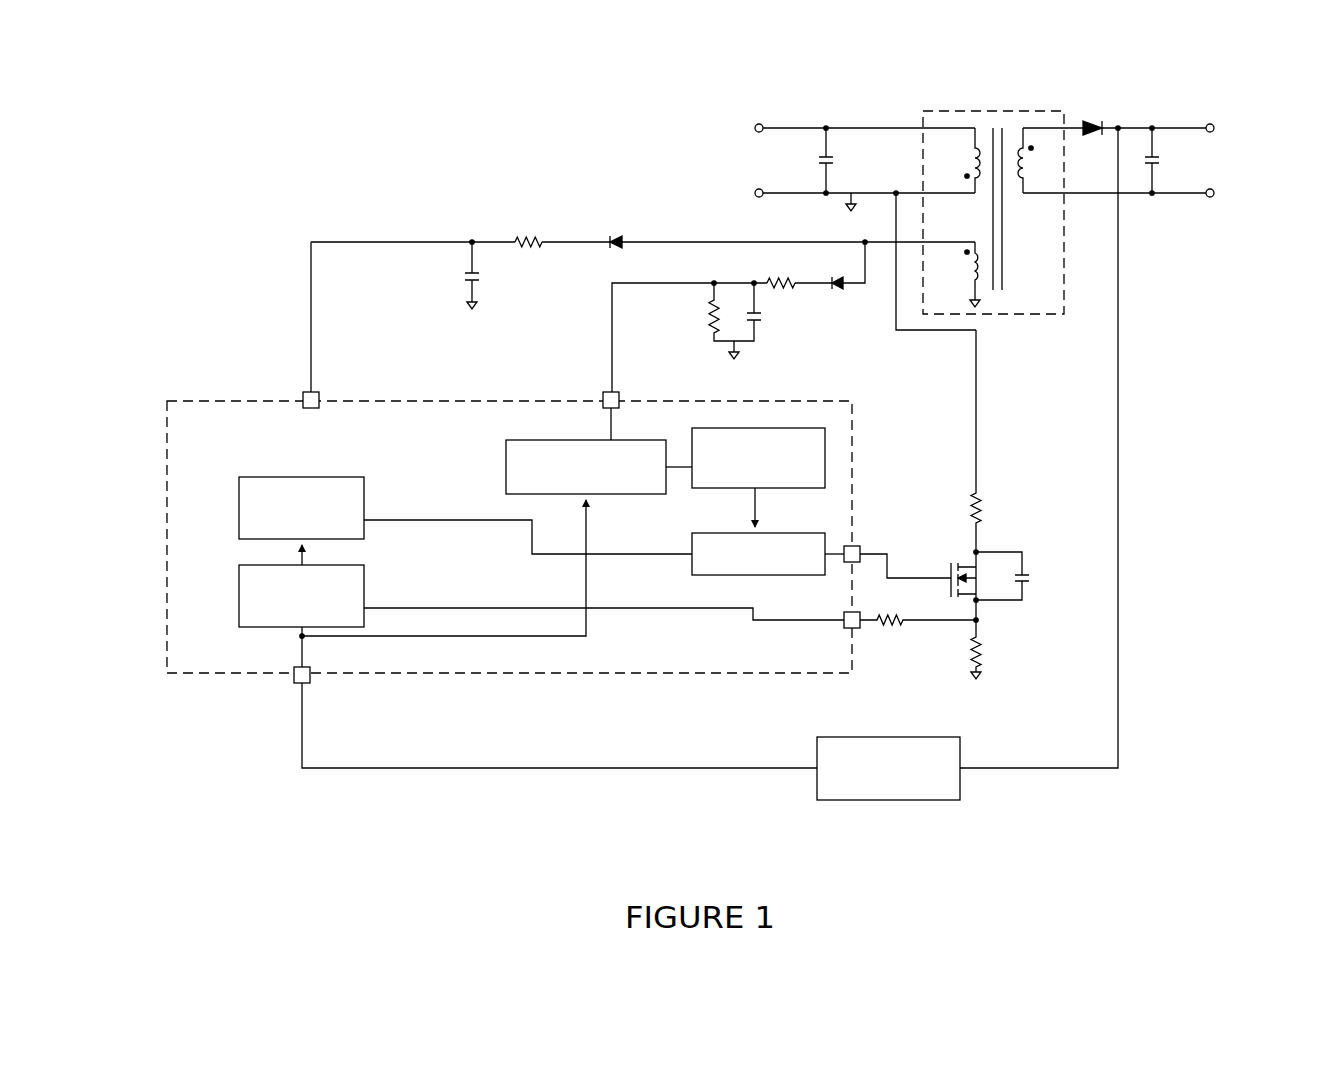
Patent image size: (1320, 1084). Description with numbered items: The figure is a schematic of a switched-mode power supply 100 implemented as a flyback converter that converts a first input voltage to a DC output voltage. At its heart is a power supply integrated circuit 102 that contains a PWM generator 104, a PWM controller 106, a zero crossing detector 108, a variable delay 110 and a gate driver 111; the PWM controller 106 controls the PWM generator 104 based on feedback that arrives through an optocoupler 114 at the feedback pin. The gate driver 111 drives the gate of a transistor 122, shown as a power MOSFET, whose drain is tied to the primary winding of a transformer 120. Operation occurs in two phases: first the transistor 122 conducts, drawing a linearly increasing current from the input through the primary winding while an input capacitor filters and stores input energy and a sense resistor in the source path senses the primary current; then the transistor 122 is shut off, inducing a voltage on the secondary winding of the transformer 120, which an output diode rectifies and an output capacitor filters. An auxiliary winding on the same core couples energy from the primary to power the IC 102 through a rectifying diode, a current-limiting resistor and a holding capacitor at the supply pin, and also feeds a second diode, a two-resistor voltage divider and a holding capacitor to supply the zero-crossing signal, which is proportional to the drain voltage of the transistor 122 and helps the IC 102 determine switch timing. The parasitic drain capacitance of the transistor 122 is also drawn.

The switched-mode power supply 100 is at (230, 120).
The power supply integrated circuit 102 is at (511, 400).
The PWM generator 104 is at (330, 477).
The PWM controller 106 is at (239, 605).
The zero crossing detector 108 is at (505, 458).
The variable delay 110 is at (780, 428).
The gate driver 111 is at (718, 576).
The optocoupler 114 is at (903, 737).
The transformer 120 is at (984, 111).
The transistor 122 is at (985, 567).